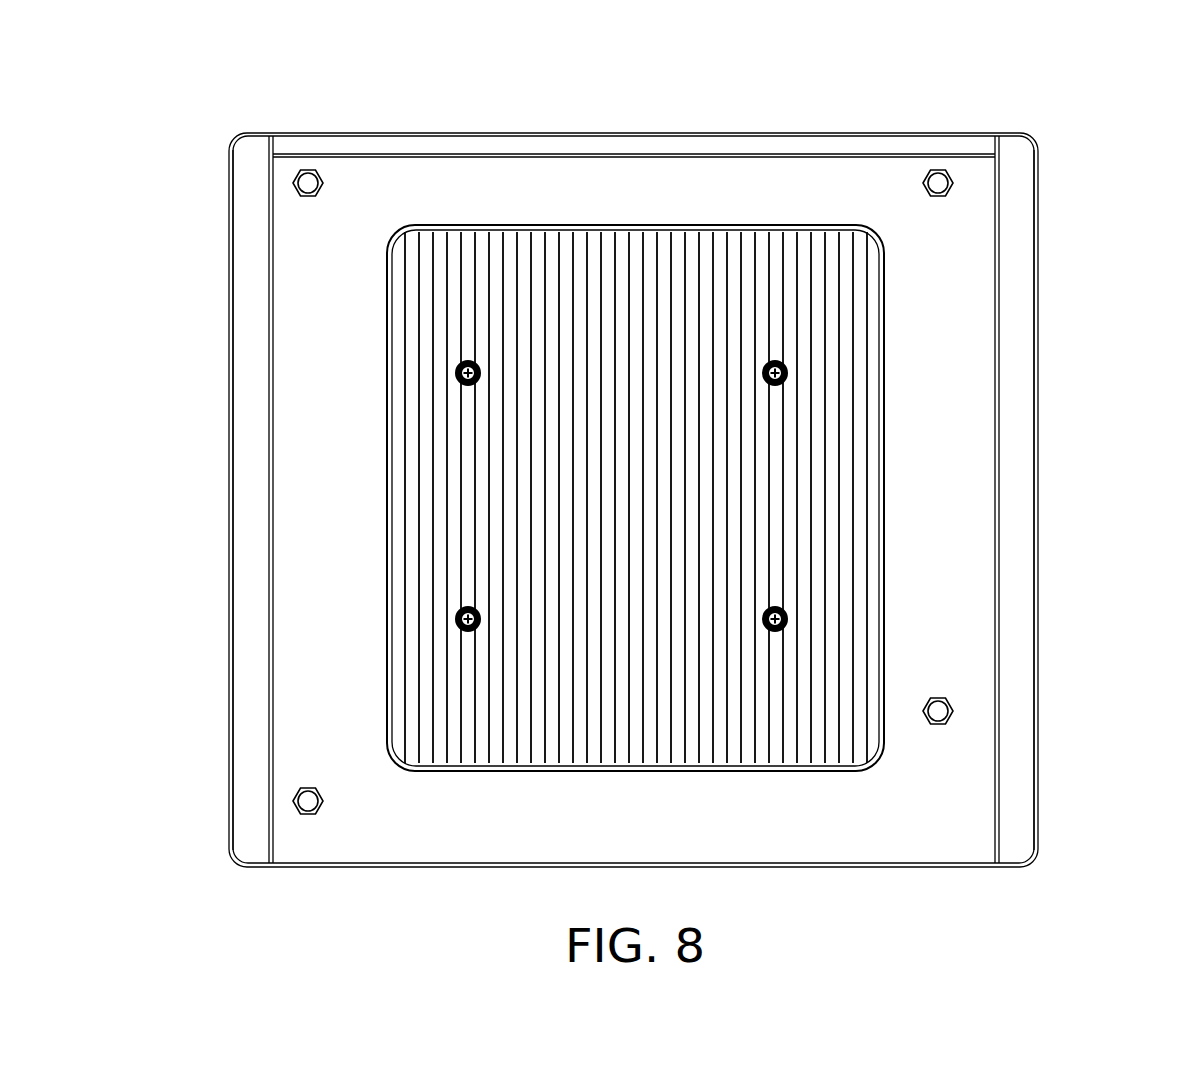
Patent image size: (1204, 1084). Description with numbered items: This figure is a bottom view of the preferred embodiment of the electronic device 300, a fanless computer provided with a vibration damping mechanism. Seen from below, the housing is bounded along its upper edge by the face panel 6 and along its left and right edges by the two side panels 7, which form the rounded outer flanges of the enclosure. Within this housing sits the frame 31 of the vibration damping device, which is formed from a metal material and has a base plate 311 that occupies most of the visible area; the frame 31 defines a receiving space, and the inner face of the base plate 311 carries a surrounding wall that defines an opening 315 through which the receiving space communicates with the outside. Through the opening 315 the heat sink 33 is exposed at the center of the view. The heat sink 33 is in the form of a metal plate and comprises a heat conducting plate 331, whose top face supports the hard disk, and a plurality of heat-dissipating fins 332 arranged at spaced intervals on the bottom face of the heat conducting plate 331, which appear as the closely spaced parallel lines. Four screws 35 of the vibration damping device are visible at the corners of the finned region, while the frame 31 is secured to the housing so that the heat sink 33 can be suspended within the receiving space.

The electronic device 300 is at (1062, 148).
The frame 31 is at (975, 648).
The base plate 311 is at (955, 570).
The opening 315 is at (884, 368).
The heat sink 33 is at (884, 417).
The heat conducting plate 331 is at (845, 467).
The heat-dissipating fins 332 is at (830, 527).
The screws 35 is at (787, 367).
The face panel 6 is at (868, 150).
The side panels 7 is at (250, 543).